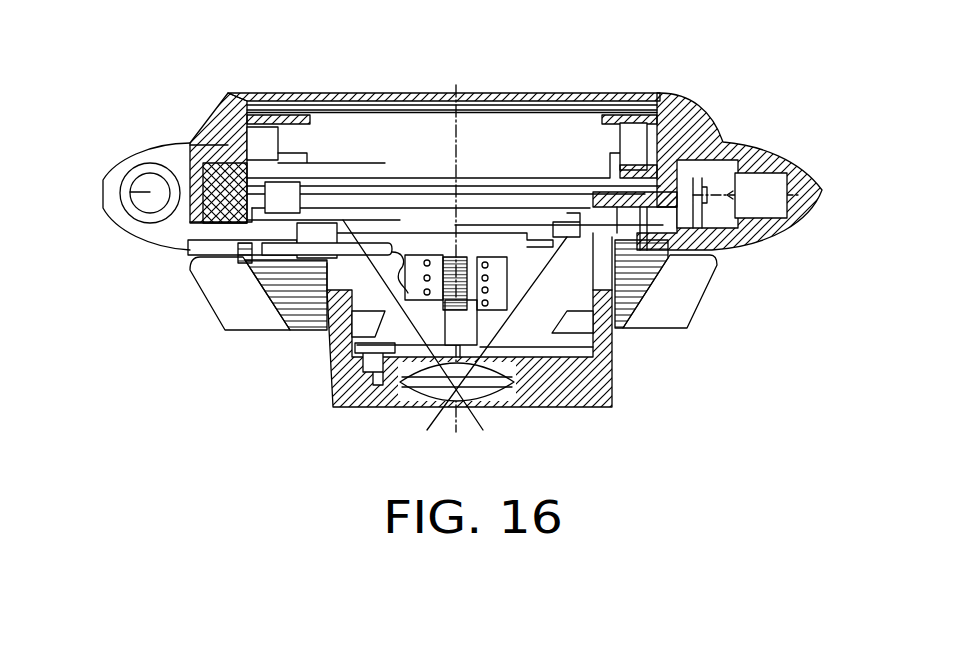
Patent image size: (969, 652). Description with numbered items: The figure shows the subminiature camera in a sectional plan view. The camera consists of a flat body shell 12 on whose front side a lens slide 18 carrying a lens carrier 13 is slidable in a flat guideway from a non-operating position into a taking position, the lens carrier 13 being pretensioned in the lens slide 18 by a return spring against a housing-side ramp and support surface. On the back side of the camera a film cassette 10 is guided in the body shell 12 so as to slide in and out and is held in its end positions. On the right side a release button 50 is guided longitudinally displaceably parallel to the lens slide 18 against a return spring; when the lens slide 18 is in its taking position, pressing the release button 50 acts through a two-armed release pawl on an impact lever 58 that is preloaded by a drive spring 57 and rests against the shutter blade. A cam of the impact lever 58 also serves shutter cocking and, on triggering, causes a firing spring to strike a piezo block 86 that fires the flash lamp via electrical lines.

The film cassette 10 is at (228, 93).
The body shell 12 is at (780, 158).
The lens carrier 13 is at (580, 383).
The lens slide 18 is at (212, 282).
The release button 50 is at (122, 192).
The drive spring 57 is at (490, 290).
The impact lever 58 is at (343, 333).
The piezo block 86 is at (768, 212).